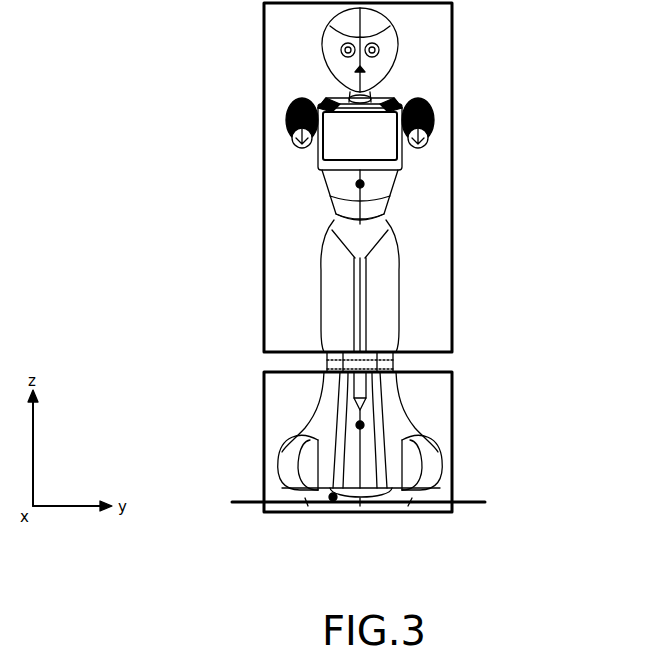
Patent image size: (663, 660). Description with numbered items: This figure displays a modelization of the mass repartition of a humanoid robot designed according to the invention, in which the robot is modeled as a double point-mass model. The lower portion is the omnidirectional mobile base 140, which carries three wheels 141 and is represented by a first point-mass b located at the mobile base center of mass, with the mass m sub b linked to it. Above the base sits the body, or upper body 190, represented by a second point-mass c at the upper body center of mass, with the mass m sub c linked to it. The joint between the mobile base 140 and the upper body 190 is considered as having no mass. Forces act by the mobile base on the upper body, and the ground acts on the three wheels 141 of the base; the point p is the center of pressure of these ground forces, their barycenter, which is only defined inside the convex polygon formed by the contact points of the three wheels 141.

The body 190 is at (452, 193).
The mobile base 140 is at (452, 427).
The wheels 141 is at (408, 506).